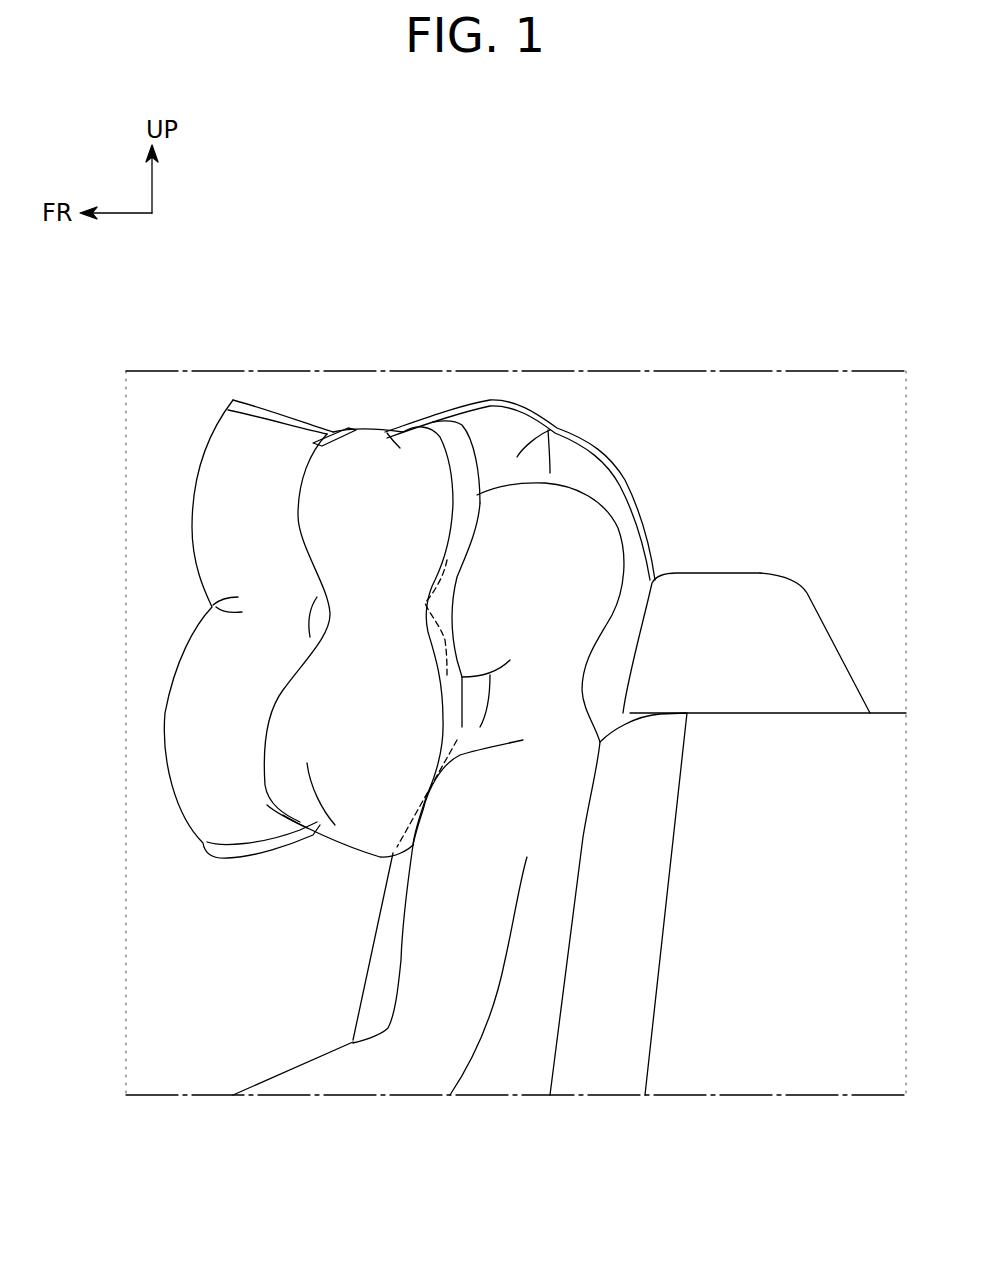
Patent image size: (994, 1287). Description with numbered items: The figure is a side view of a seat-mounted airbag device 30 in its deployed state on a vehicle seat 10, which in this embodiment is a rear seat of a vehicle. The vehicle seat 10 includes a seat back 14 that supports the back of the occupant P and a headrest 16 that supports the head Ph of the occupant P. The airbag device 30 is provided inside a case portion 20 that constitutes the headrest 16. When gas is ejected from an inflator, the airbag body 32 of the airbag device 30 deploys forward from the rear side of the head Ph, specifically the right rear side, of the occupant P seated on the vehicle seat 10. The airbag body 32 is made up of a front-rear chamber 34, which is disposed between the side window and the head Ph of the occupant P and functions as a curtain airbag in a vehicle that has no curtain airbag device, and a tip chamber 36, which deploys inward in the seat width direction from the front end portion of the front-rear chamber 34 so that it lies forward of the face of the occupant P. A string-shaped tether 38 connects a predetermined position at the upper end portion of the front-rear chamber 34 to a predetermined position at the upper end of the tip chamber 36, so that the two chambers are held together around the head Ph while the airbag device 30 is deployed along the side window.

The vehicle seat 10 is at (551, 1062).
The seat back 14 is at (574, 920).
The headrest 16 is at (706, 575).
The case portion 20 is at (780, 627).
The seat-mounted airbag device 30 is at (231, 403).
The airbag body 32 is at (532, 275).
The front-rear chamber 34 is at (488, 433).
The tip chamber 36 is at (383, 467).
The tether 38 is at (330, 432).
The occupant P is at (592, 497).
The head Ph is at (533, 520).